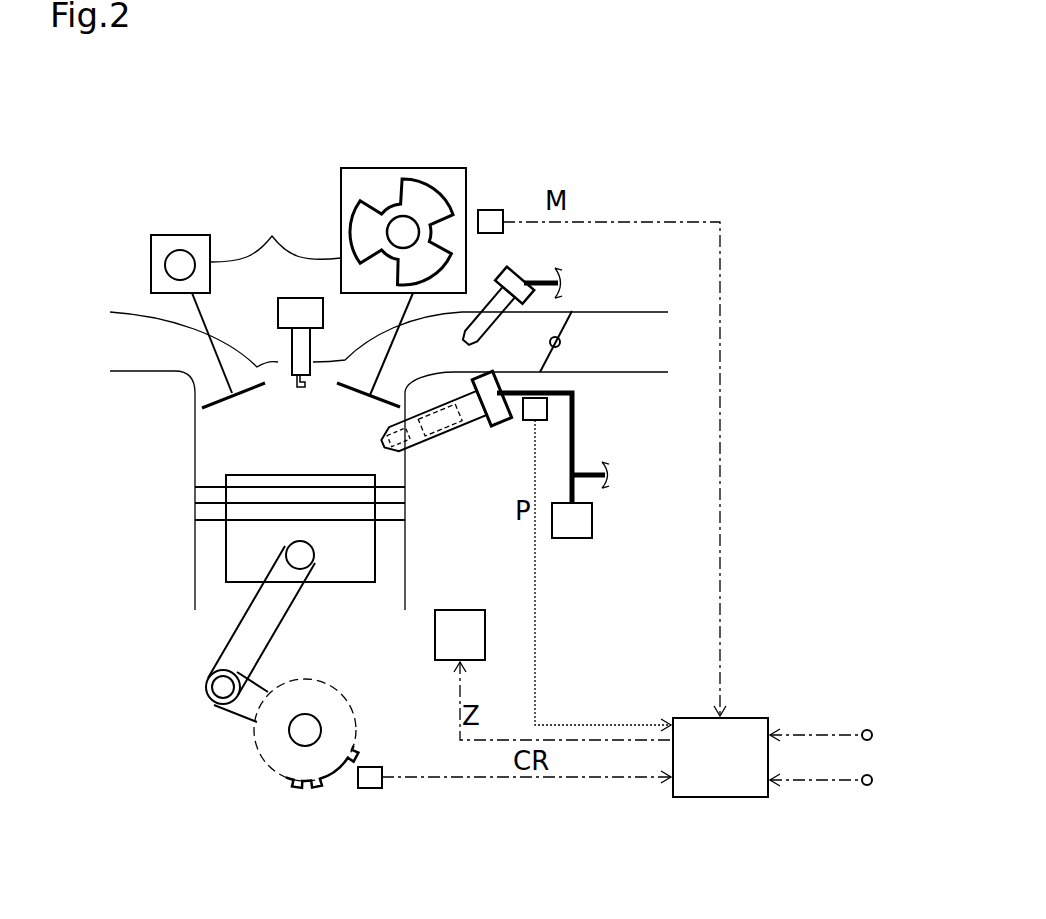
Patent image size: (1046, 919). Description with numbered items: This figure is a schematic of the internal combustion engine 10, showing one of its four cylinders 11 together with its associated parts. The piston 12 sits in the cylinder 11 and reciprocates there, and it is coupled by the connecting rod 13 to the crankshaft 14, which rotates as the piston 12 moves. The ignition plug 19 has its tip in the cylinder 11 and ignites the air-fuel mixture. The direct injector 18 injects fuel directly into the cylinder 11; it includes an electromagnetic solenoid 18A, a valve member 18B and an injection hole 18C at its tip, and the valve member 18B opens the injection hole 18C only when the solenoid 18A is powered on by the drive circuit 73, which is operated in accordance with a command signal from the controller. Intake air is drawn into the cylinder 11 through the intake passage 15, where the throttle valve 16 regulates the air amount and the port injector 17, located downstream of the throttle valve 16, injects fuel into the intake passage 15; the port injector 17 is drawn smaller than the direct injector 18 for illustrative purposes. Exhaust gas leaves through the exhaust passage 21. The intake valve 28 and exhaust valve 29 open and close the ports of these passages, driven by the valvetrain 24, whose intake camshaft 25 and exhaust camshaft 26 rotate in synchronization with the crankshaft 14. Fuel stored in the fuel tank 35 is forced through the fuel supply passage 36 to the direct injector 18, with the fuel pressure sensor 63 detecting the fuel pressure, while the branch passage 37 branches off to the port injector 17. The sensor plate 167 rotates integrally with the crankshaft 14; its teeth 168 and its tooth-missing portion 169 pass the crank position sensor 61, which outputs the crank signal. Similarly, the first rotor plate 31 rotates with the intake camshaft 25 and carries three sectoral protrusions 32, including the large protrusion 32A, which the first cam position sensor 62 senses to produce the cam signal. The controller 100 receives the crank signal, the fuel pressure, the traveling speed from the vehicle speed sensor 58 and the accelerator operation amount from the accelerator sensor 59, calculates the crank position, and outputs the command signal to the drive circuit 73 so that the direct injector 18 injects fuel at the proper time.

The internal combustion engine 10 is at (653, 147).
The cylinder 11 is at (408, 545).
The piston 12 is at (378, 575).
The connecting rod 13 is at (275, 625).
The crankshaft 14 is at (292, 740).
The intake passage 15 is at (622, 373).
The throttle valve 16 is at (582, 305).
The port injector 17 is at (510, 272).
The direct injector 18 is at (437, 440).
The electromagnetic solenoid 18A is at (448, 402).
The valve member 18B is at (395, 420).
The injection hole 18C is at (380, 445).
The ignition plug 19 is at (290, 345).
The exhaust passage 21 is at (126, 375).
The valvetrain 24 is at (276, 231).
The intake camshaft 25 is at (412, 228).
The exhaust camshaft 26 is at (178, 250).
The intake valve 28 is at (398, 332).
The exhaust valve 29 is at (210, 350).
The first rotor plate 31 is at (345, 198).
The protrusion 32 is at (378, 295).
The large protrusion 32A is at (396, 178).
The fuel tank 35 is at (594, 522).
The fuel supply passage 36 is at (570, 372).
The branch passage 37 is at (582, 470).
The vehicle speed sensor 58 is at (873, 736).
The accelerator sensor 59 is at (873, 781).
The crank position sensor 61 is at (375, 790).
The first cam position sensor 62 is at (490, 208).
The fuel pressure sensor 63 is at (532, 422).
The drive circuit 73 is at (488, 648).
The controller 100 is at (698, 716).
The sensor plate 167 is at (348, 685).
The teeth 168 is at (332, 790).
The tooth-missing portion 169 is at (370, 748).